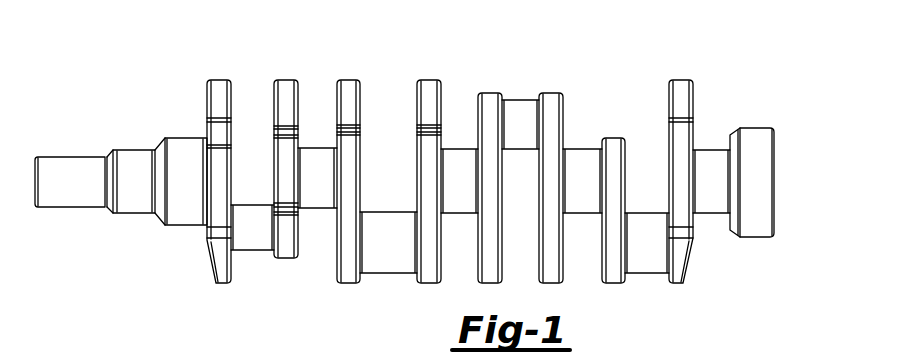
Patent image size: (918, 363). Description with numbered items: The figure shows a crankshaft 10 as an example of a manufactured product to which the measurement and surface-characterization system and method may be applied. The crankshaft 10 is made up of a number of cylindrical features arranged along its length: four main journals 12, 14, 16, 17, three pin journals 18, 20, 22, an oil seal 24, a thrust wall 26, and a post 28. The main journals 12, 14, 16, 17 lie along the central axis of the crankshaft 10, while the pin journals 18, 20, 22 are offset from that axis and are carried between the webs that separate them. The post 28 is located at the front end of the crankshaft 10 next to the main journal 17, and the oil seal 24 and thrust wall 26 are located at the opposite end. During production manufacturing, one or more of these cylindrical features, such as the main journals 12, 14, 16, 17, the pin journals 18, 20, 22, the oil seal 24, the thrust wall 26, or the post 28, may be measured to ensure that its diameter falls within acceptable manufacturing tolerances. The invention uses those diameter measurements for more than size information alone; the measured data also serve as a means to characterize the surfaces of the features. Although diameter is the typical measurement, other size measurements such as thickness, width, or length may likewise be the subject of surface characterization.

The crankshaft 10 is at (737, 51).
The main journal 12 is at (319, 148).
The main journal 14 is at (463, 149).
The main journal 16 is at (585, 149).
The main journal 17 is at (185, 138).
The pin journal 18 is at (255, 251).
The pin journal 20 is at (388, 274).
The pin journal 22 is at (521, 100).
The oil seal 24 is at (752, 128).
The thrust wall 26 is at (716, 214).
The post 28 is at (71, 157).